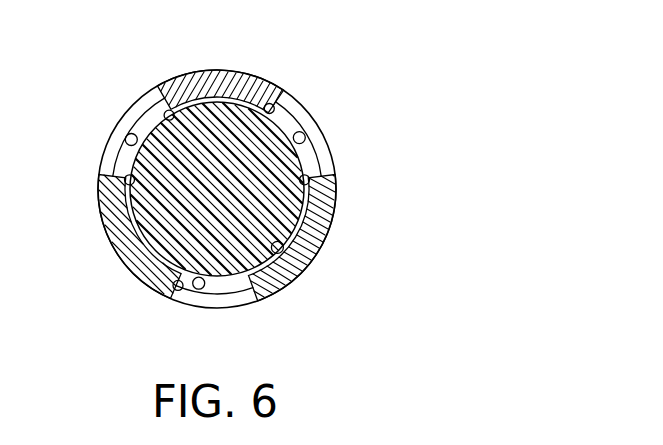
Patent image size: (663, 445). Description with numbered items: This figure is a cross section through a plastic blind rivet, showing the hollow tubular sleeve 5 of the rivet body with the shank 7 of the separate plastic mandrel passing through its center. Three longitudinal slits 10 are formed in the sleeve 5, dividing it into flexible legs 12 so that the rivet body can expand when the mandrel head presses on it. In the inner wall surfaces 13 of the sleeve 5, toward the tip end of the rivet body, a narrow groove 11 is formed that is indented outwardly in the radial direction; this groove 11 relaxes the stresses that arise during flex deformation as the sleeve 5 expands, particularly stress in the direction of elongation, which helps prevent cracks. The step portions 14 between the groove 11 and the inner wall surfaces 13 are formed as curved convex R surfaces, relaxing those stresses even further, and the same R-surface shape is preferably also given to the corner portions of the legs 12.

The sleeve 5 is at (243, 305).
The shank 7 is at (272, 220).
The slits 10 is at (117, 141).
The groove 11 is at (127, 136).
The legs 12 is at (247, 82).
The inner wall surfaces 13 is at (208, 98).
The step portions 14 is at (172, 111).